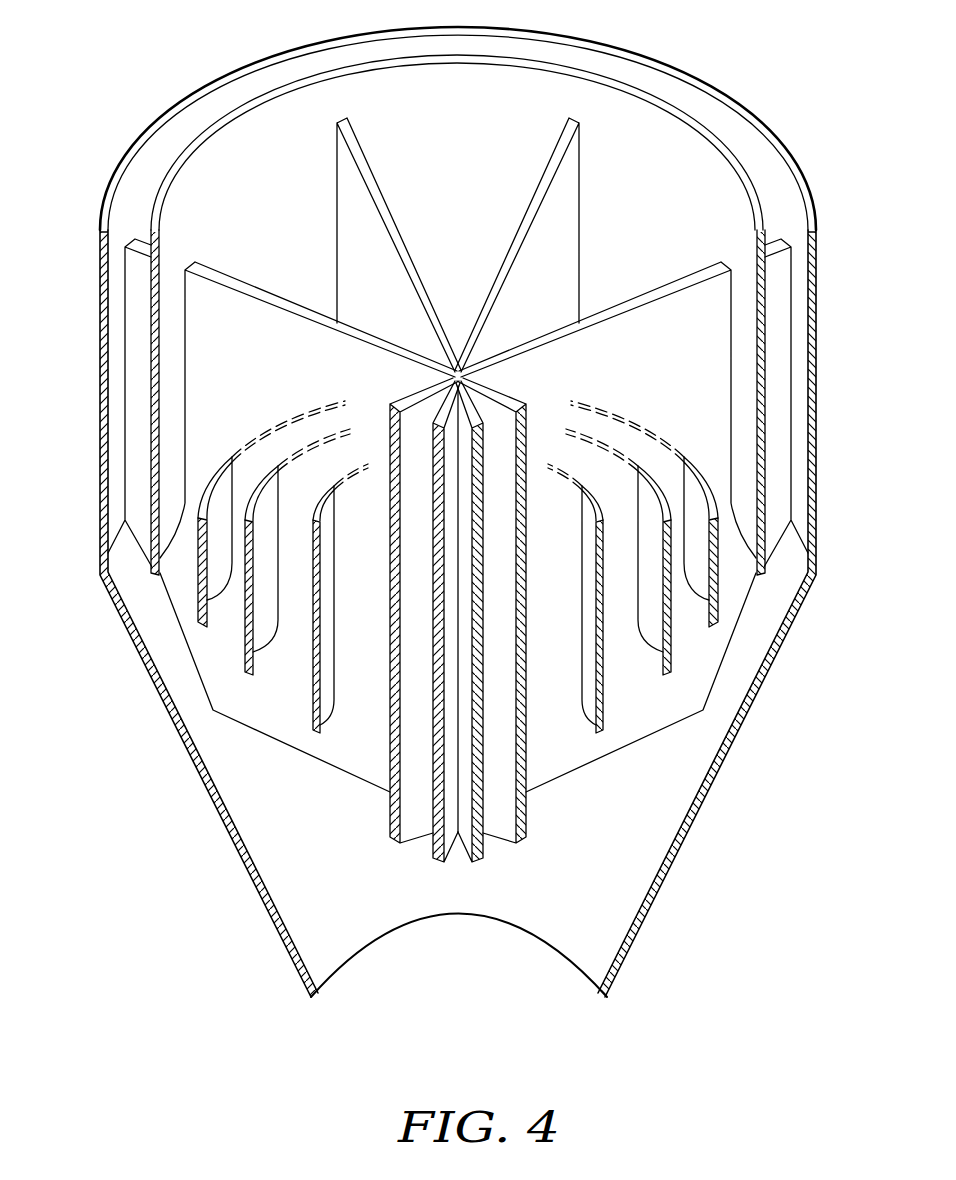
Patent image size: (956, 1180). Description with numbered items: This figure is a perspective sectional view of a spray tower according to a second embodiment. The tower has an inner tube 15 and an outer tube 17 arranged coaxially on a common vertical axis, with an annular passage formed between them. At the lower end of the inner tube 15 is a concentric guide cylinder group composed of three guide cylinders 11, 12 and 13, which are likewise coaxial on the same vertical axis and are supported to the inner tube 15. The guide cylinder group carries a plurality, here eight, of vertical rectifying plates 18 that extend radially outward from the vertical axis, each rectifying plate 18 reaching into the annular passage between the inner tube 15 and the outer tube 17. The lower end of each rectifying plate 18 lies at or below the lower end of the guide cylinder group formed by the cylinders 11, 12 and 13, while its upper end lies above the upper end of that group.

The guide cylinder 11 is at (313, 700).
The guide cylinder 12 is at (245, 648).
The guide cylinder 13 is at (198, 593).
The inner tube 15 is at (655, 123).
The outer tube 17 is at (767, 167).
The vertical rectifying plate 18 is at (370, 218).